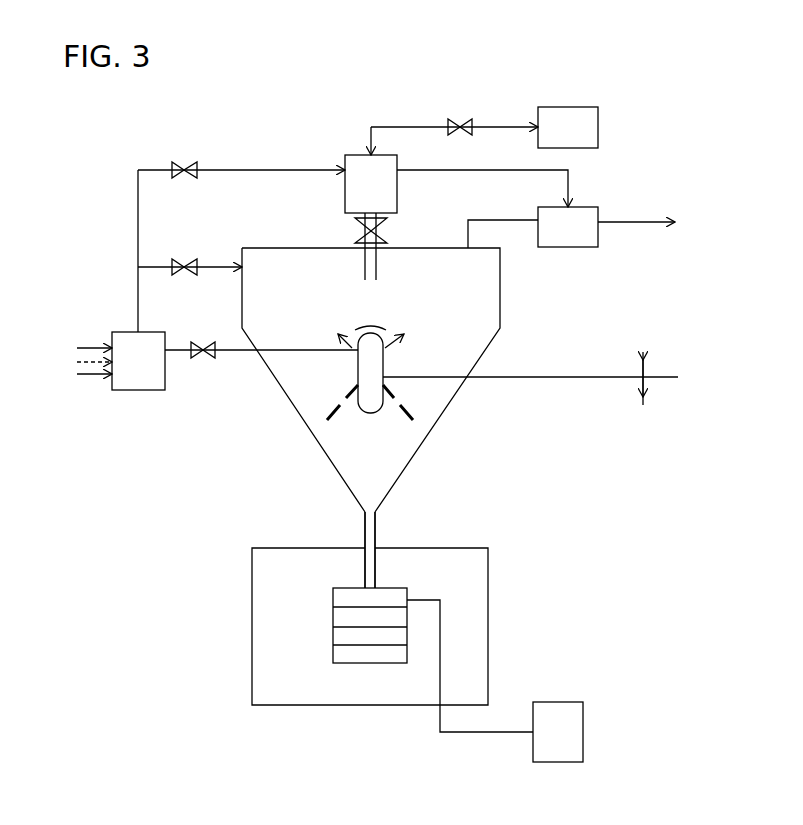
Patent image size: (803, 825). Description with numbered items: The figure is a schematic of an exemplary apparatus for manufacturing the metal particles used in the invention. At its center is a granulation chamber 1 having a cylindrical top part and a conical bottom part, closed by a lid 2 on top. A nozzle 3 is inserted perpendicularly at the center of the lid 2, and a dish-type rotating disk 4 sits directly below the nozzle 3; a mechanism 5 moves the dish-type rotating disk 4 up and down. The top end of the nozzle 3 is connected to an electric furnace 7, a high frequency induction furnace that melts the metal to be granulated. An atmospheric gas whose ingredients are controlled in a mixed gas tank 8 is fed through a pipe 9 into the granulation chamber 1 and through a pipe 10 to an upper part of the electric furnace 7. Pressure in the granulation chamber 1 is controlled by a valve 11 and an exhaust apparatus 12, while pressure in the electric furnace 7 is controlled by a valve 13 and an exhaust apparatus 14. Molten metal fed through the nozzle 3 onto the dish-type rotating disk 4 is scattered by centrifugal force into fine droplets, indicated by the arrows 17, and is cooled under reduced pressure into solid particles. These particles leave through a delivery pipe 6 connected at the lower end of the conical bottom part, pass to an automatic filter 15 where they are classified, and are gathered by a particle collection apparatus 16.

The granulation chamber 1 is at (500, 305).
The lid 2 is at (432, 250).
The nozzle 3 is at (378, 262).
The dish-type rotating disk 4 is at (375, 328).
The mechanism 5 is at (572, 377).
The delivery pipe 6 is at (377, 528).
The electric furnace 7 is at (390, 183).
The mixed gas tank 8 is at (150, 390).
The pipe 9 is at (210, 268).
The pipe 10 is at (245, 170).
The valve 11 is at (186, 262).
The exhaust apparatus 12 is at (597, 235).
The valve 13 is at (197, 165).
The exhaust apparatus 14 is at (590, 128).
The automatic filter 15 is at (373, 658).
The particle collection apparatus 16 is at (573, 748).
The flow arrows 17 is at (350, 347).